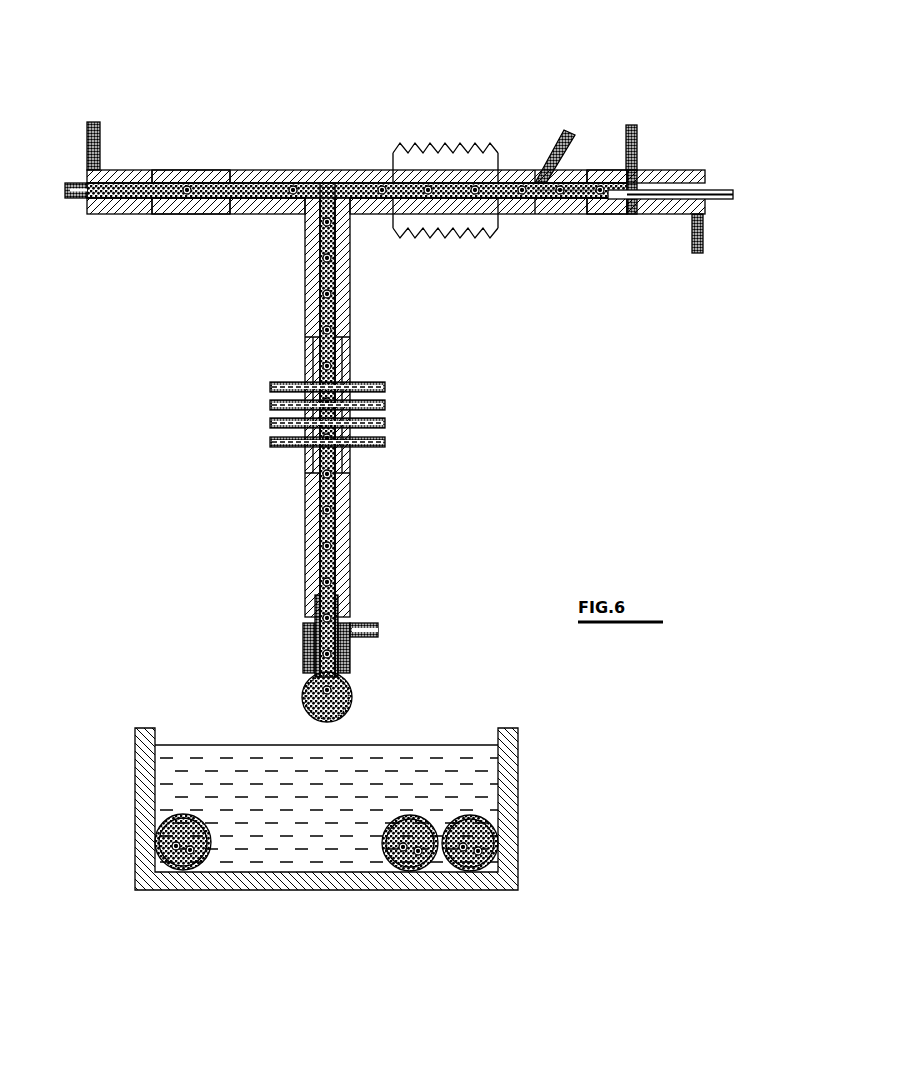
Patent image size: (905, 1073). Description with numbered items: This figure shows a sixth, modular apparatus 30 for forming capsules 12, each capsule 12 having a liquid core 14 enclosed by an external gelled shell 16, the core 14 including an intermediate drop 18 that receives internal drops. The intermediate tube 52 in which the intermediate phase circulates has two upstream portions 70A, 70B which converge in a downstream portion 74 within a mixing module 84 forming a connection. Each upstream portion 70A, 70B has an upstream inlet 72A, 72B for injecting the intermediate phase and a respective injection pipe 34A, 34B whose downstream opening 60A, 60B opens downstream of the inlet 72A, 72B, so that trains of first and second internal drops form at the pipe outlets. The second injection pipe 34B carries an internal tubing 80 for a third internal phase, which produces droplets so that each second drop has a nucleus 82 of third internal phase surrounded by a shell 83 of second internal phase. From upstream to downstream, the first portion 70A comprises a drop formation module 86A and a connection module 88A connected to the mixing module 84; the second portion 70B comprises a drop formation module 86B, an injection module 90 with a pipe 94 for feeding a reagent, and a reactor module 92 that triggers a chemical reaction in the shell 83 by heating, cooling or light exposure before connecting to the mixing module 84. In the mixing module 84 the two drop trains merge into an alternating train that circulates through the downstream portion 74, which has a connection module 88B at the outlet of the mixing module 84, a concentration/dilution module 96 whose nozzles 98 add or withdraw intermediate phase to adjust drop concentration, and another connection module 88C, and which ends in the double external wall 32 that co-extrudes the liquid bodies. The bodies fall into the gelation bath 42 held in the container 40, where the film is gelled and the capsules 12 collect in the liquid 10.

The liquid bath 10 is at (220, 738).
The capsule 12 is at (460, 807).
The liquid core 14 is at (180, 870).
The external gelled shell 16 is at (155, 812).
The intermediate drop 18 is at (400, 820).
The apparatus 30 is at (532, 92).
The double external wall 32 is at (352, 668).
The first injection pipe 34A is at (76, 198).
The second injection pipe 34B is at (630, 214).
The container 40 is at (115, 755).
The gelation bath 42 is at (319, 750).
The intermediate tube 52 is at (455, 353).
The first downstream opening 60A is at (155, 168).
The second downstream opening 60B is at (607, 214).
The first upstream portion 70A is at (165, 220).
The second upstream portion 70B is at (405, 250).
The first upstream inlet 72A is at (87, 150).
The second upstream inlet 72B is at (637, 140).
The downstream portion 74 is at (362, 508).
The internal tubing 80 is at (705, 181).
The nucleus of third internal phase 82 is at (617, 183).
The shell of second internal phase 83 is at (583, 183).
The mixing module 84 is at (313, 170).
The first drop formation module 86A is at (123, 122).
The second drop formation module 86B is at (705, 233).
The first connection module 88A is at (220, 117).
The second connection module 88B is at (350, 297).
The third connection module 88C is at (350, 583).
The injection module 90 is at (523, 215).
The reactor module 92 is at (413, 143).
The reagent pipe 94 is at (548, 160).
The concentration/dilution module 96 is at (350, 370).
The nozzles 98 is at (385, 447).